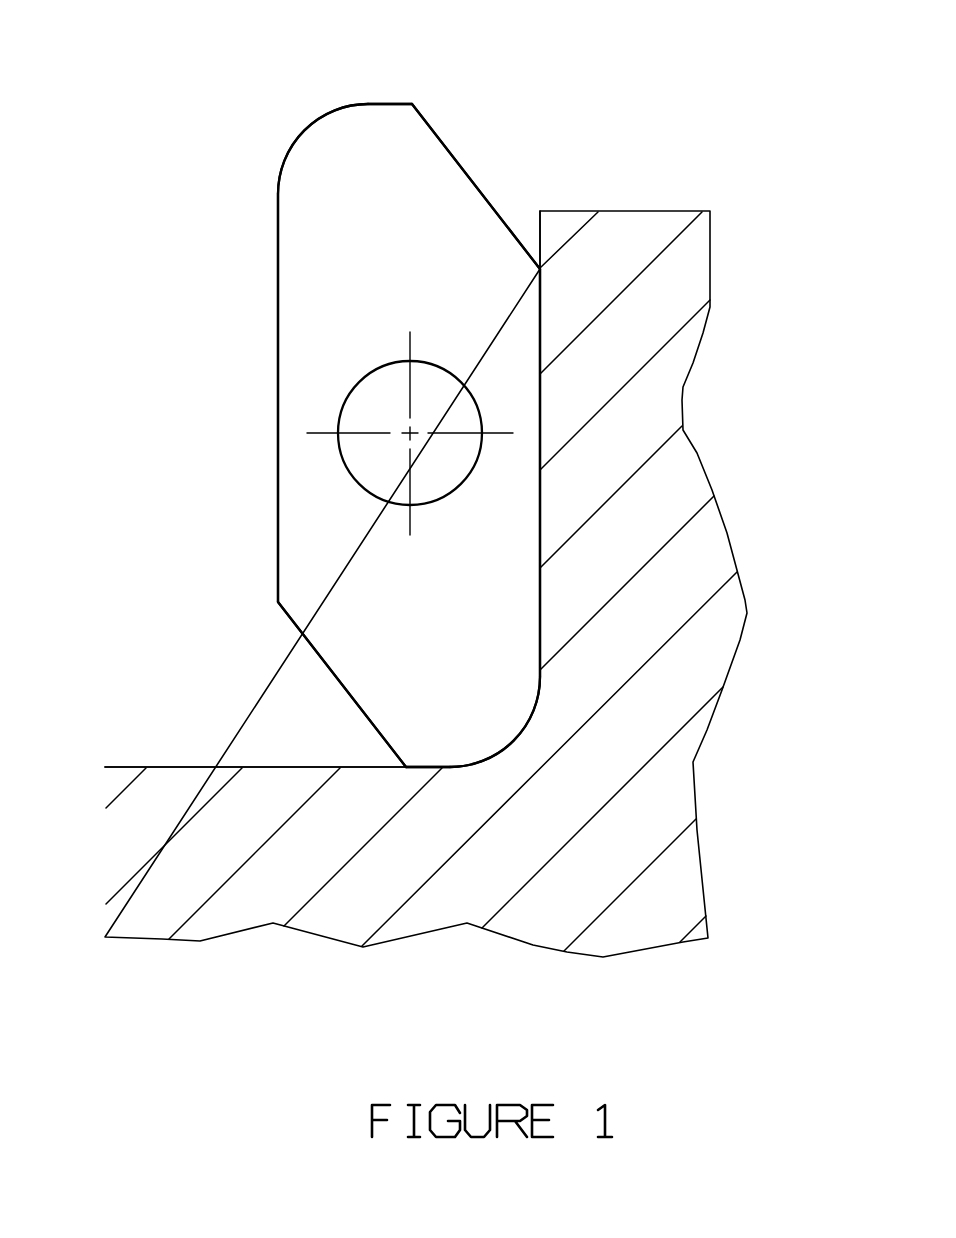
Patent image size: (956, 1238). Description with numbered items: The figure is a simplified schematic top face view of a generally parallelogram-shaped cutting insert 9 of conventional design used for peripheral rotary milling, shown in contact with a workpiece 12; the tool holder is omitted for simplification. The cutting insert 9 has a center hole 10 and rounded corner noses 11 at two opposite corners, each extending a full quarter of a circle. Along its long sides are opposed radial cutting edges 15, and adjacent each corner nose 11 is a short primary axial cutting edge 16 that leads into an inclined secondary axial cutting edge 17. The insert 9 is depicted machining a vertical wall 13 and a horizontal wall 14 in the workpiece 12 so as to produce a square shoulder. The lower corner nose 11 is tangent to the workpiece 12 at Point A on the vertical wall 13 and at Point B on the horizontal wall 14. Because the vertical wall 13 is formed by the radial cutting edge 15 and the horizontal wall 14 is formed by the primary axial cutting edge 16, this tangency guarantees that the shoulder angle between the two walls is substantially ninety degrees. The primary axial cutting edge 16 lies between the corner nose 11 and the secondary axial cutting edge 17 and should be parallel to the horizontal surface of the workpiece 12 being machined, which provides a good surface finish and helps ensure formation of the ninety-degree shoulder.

The cutting insert 9 is at (223, 333).
The center hole 10 is at (345, 468).
The corner nose 11 is at (312, 127).
The workpiece 12 is at (180, 972).
The vertical wall 13 is at (545, 600).
The horizontal wall 14 is at (203, 766).
The radial cutting edge 15 is at (538, 313).
The primary axial cutting edge 16 is at (387, 102).
The secondary axial cutting edge 17 is at (470, 168).
The Point A is at (537, 671).
The Point B is at (452, 770).